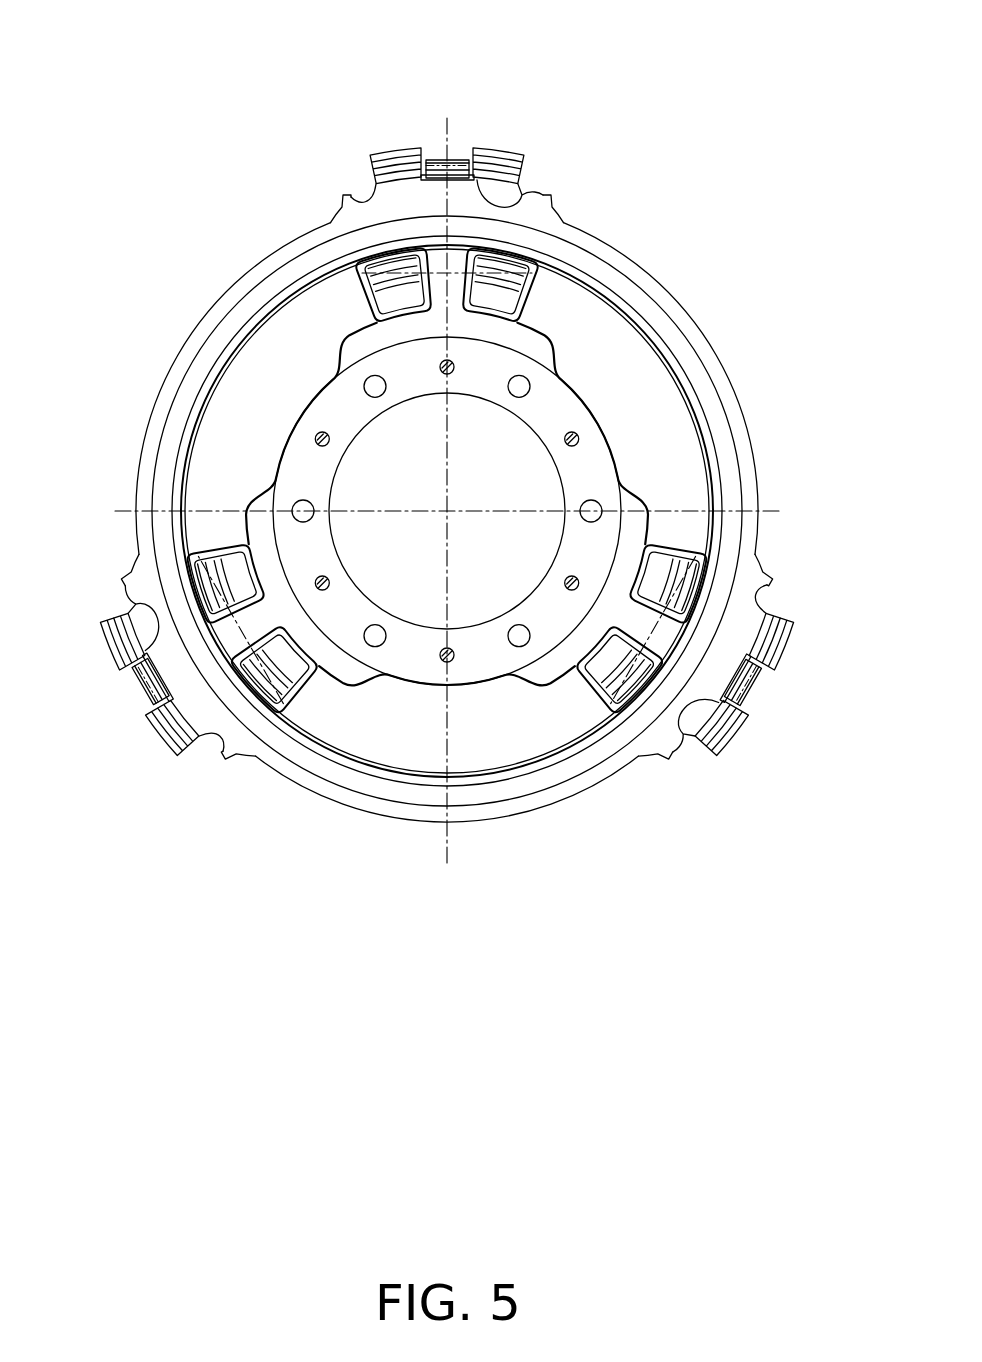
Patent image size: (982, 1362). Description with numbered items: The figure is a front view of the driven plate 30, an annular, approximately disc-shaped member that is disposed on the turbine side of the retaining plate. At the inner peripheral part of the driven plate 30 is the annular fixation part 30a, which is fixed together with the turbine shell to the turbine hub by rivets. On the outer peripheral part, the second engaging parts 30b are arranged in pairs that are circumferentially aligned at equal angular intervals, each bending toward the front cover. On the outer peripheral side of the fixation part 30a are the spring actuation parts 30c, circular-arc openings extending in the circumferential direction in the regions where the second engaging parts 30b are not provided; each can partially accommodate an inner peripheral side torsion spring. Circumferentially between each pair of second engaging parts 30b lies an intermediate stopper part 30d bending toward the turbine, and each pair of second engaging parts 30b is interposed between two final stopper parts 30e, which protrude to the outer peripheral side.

The driven plate 30 is at (187, 303).
The fixation part 30a is at (563, 410).
The second engaging parts 30b is at (498, 148).
The spring actuation parts 30c is at (322, 277).
The intermediate stopper parts 30d is at (518, 192).
The final stopper parts 30e is at (345, 198).